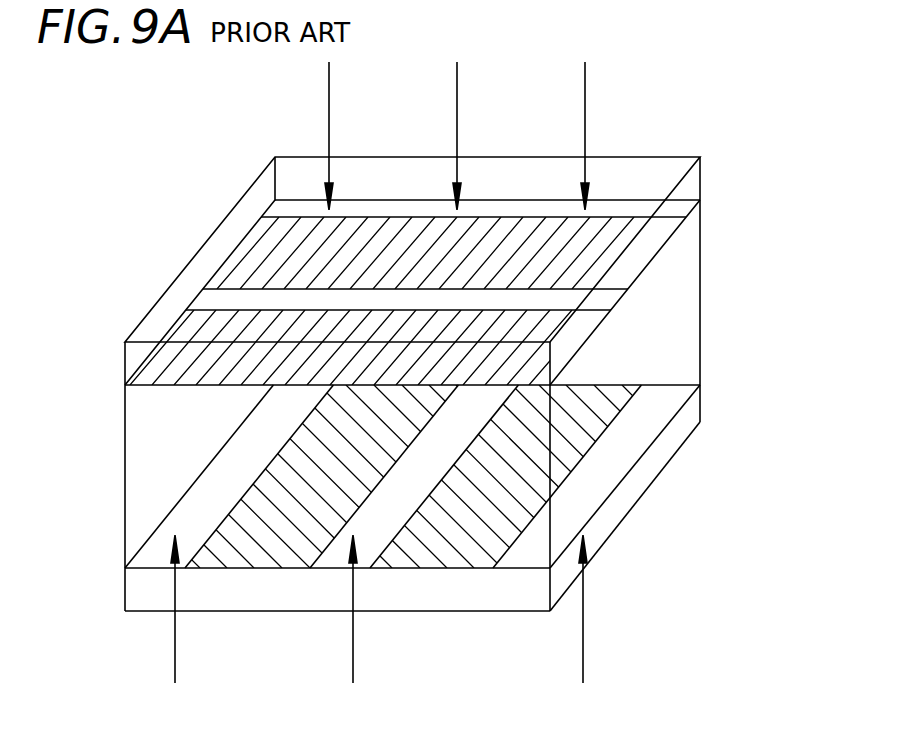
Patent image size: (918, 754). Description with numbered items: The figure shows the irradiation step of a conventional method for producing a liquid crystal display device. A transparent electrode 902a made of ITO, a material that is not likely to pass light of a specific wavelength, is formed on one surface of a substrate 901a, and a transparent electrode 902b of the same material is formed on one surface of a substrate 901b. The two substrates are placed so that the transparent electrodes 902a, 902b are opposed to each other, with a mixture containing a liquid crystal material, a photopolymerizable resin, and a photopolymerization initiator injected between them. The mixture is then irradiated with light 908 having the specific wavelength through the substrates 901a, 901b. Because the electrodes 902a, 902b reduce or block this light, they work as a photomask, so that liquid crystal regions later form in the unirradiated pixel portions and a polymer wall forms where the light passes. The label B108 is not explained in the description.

The light 908 is at (461, 113).
The substrate 901a is at (698, 181).
The substrate 901b is at (696, 410).
The transparent electrode 902a is at (253, 248).
The transparent electrode 902b is at (248, 563).
The transmitted light B108 is at (379, 630).